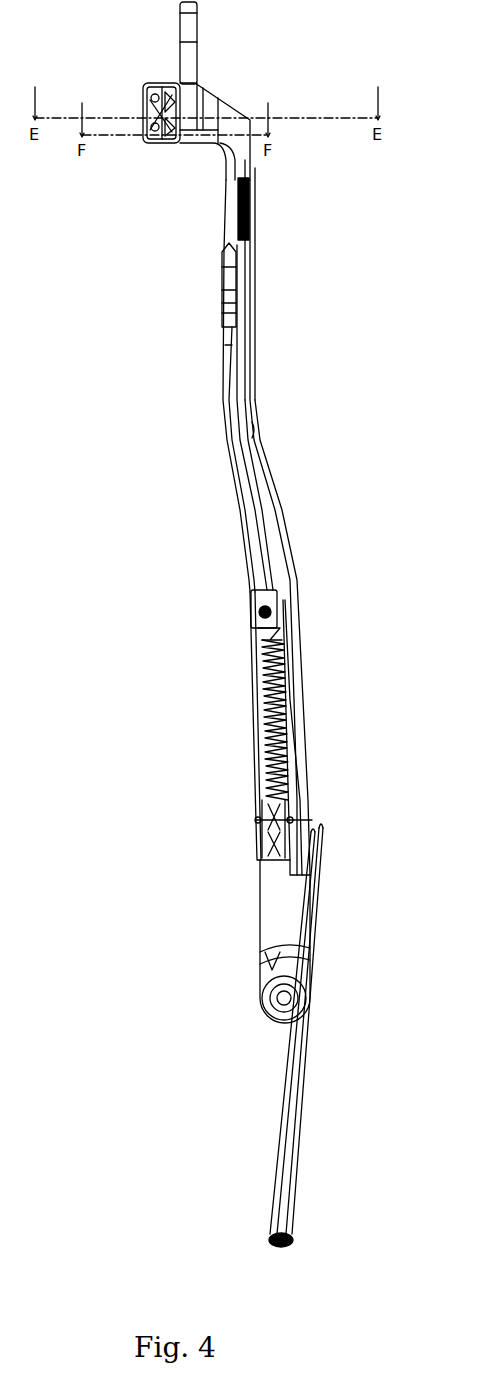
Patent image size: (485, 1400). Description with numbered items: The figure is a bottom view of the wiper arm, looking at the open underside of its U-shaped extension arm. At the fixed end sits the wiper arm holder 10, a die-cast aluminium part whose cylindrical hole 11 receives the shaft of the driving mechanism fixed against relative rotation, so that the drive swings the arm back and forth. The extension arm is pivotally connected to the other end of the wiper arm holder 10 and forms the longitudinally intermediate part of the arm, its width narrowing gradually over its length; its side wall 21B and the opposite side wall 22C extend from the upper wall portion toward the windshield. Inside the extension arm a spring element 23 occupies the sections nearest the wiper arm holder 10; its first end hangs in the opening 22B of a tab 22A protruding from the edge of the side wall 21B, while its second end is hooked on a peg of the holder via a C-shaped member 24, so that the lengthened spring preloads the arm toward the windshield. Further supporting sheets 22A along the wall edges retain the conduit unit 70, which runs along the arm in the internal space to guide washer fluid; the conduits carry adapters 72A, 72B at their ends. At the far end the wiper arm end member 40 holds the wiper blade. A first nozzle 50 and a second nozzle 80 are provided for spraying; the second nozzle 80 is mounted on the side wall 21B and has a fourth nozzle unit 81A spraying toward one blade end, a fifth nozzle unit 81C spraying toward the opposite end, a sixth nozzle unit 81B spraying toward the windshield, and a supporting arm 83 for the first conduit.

The wiper arm holder 10 is at (276, 910).
The cylindrical hole 11 is at (261, 998).
The side wall 21B is at (222, 430).
The tab 22A is at (225, 380).
The opening 22B is at (258, 612).
The arm outer member 22C is at (277, 483).
The spring element 23 is at (263, 709).
The C-shaped member 24 is at (256, 820).
The wiper arm end member 40 is at (215, 108).
The first nozzle 50 is at (158, 88).
The conduit unit 70 is at (281, 1035).
The adapter 72A is at (298, 1192).
The adapter 72B is at (283, 1147).
The second nozzle 80 is at (197, 291).
The fourth nozzle unit 81A is at (221, 315).
The sixth nozzle unit 81B is at (221, 292).
The fifth nozzle unit 81C is at (222, 265).
The supporting arm 83 is at (222, 303).